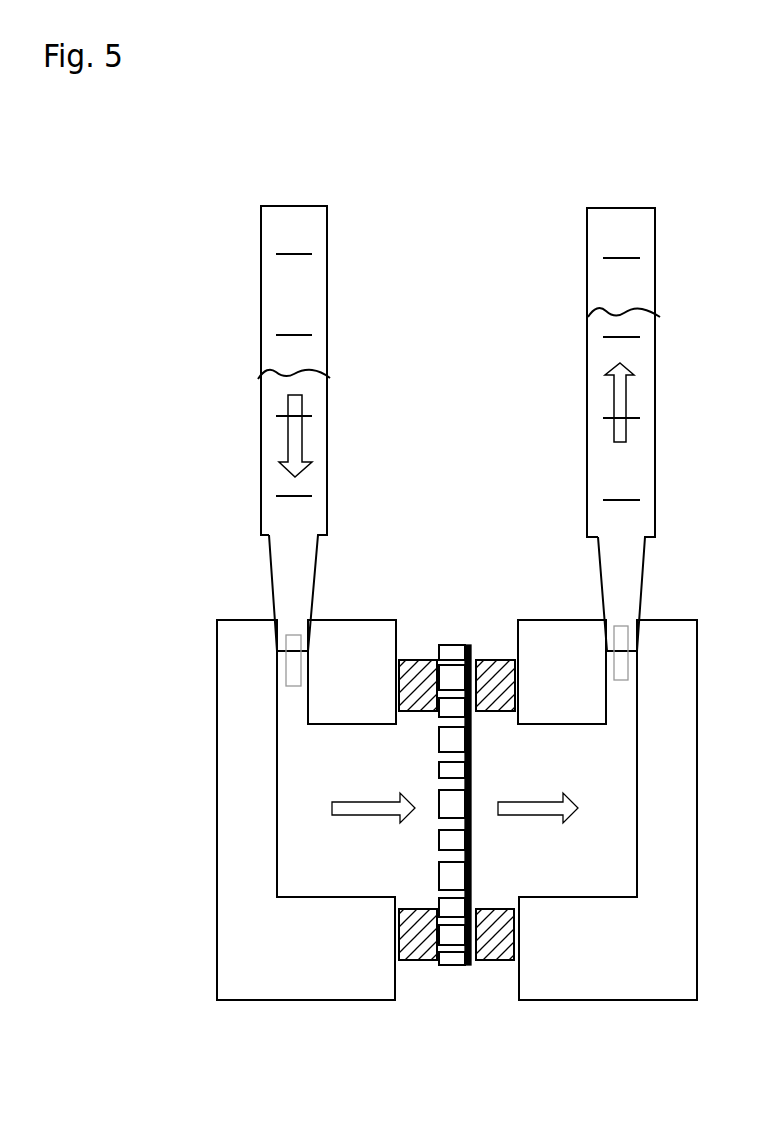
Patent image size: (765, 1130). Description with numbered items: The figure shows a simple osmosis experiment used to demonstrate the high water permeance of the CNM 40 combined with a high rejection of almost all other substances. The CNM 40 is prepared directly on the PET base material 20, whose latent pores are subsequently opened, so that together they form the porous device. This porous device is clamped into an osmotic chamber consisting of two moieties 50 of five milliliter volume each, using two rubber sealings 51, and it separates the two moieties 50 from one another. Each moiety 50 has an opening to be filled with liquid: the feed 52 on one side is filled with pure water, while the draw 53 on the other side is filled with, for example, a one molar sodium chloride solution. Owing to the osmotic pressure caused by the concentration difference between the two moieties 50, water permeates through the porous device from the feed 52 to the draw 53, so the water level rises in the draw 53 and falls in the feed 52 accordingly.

The PET base material 20 is at (449, 978).
The CNM 40 is at (471, 979).
The moieties 50 is at (457, 810).
The rubber sealings 51 is at (419, 982).
The feed 52 is at (344, 440).
The draw 53 is at (566, 427).